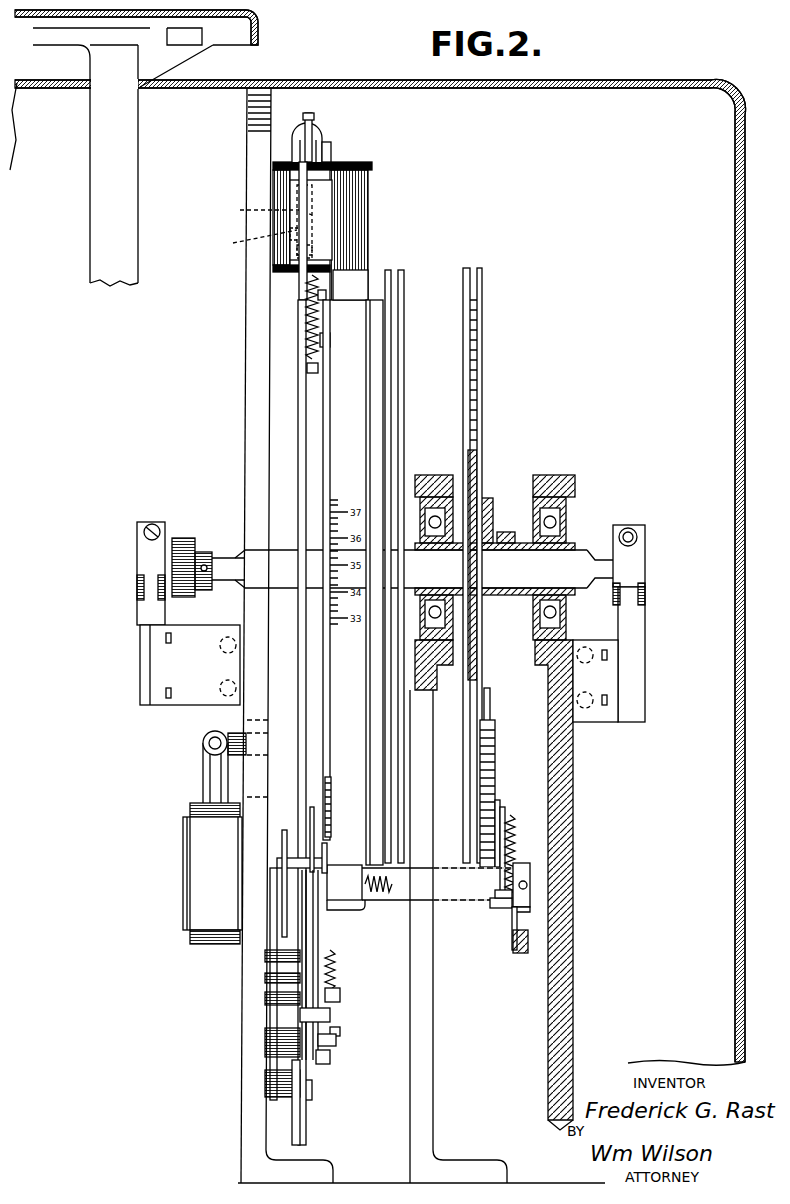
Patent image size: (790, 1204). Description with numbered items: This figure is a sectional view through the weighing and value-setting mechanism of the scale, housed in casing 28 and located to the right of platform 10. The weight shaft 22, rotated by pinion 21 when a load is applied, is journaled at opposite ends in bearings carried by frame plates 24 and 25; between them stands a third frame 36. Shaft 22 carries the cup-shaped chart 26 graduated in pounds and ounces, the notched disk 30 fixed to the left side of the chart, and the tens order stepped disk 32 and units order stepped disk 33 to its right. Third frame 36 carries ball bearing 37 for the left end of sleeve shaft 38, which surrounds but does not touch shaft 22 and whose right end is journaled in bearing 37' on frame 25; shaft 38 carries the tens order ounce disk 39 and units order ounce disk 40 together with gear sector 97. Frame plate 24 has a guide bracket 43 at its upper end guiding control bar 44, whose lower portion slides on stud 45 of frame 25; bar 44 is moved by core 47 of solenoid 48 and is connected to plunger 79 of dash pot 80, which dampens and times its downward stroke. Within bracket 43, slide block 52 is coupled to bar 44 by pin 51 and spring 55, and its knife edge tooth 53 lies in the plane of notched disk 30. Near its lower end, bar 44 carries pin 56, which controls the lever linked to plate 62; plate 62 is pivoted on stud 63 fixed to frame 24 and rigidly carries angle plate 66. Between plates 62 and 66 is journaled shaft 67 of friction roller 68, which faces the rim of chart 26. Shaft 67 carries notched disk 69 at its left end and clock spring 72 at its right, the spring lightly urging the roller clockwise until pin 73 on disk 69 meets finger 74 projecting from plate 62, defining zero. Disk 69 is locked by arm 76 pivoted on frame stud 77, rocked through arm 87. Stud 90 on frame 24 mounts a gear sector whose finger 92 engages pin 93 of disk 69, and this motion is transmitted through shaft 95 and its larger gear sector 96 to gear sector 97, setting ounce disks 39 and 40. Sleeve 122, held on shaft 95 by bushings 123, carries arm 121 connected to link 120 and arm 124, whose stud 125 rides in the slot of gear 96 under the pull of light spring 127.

The platform 10 is at (259, 30).
The casing 28 is at (478, 88).
The frame plate 24 is at (258, 450).
The third frame 36 is at (432, 1068).
The frame plate 25 is at (563, 806).
The weight shaft 22 is at (290, 555).
The pinion 21 is at (183, 540).
The ball bearing 37 is at (461, 551).
The bearing 37' is at (575, 550).
The sleeve shaft 38 is at (522, 605).
The solenoid 48 is at (357, 205).
The guide bracket 43 is at (322, 180).
The core 47 is at (323, 133).
The stud 45 is at (313, 118).
The control bar 44 is at (299, 318).
The notched disk 30 is at (298, 395).
The slide block 52 is at (262, 220).
The pin 51 is at (258, 243).
The knife edge tooth 53 is at (318, 296).
The spring 55 is at (307, 336).
The cup-shaped chart 26 is at (355, 420).
The tens order stepped disk 32 is at (388, 270).
The units order stepped disk 33 is at (402, 268).
The tens order ounce disk 39 is at (467, 268).
The units order ounce disk 40 is at (483, 288).
The gear sector 97 is at (490, 722).
The gear sector 96 is at (492, 790).
The stud 125 is at (497, 808).
The arm 124 is at (505, 810).
The light spring 127 is at (513, 858).
The shaft 67 is at (402, 905).
The friction roller 68 is at (345, 872).
The angle plate 66 is at (345, 915).
The clock spring 72 is at (378, 897).
The shaft 95 is at (532, 898).
The bushings 123 is at (493, 908).
The sleeve 122 is at (500, 912).
The arm 121 is at (511, 933).
The link 120 is at (520, 955).
The plunger 79 is at (213, 782).
The dash pot 80 is at (183, 863).
The stud 90 is at (275, 925).
The pin 93 is at (277, 862).
The finger 92 is at (285, 830).
The notched disk 69 is at (314, 825).
The finger 74 is at (327, 852).
The plate 62 is at (330, 1016).
The frame stud 77 is at (313, 1066).
The pin 73 is at (335, 947).
The arm 76 is at (340, 996).
The arm 87 is at (340, 1032).
The pin 56 is at (336, 1040).
The stud 63 is at (330, 1058).